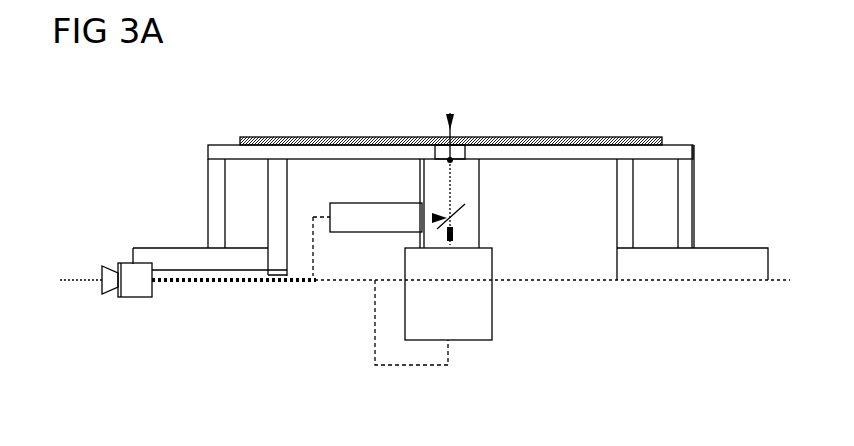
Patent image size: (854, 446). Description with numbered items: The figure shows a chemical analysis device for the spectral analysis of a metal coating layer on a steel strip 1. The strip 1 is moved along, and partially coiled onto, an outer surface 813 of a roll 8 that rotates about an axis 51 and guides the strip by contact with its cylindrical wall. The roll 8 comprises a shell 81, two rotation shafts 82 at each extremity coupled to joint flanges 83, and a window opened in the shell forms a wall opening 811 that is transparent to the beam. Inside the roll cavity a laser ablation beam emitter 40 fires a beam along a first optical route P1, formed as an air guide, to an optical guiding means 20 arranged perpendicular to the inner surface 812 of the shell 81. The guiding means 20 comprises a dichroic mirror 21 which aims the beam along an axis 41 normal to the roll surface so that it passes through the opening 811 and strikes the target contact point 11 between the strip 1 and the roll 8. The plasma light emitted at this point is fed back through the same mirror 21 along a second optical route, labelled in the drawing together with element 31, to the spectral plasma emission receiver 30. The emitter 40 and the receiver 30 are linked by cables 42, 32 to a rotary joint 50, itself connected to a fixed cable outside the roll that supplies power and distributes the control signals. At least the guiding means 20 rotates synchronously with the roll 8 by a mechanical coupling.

The steel strip 1 is at (513, 137).
The roll 8 is at (150, 163).
The target contact point 11 is at (452, 113).
The optical guiding means 20 is at (481, 192).
The dichroic mirror 21 is at (466, 212).
The spectral plasma emission receiver 30 is at (470, 342).
The signal path / position P2 31 is at (455, 242).
The cable 32 is at (403, 367).
The laser ablation beam emitter 40 is at (330, 203).
The axis 41 is at (448, 197).
The cable 42 is at (320, 250).
The rotary joint 50 is at (137, 300).
The axis 51 is at (76, 272).
The shell 81 is at (668, 137).
The wall opening 811 is at (470, 152).
The inner surface 812 is at (594, 162).
The outer surface 813 is at (224, 143).
The rotation shaft 82 is at (742, 248).
The joint flange 83 is at (696, 177).
The first optical route P1 is at (424, 246).